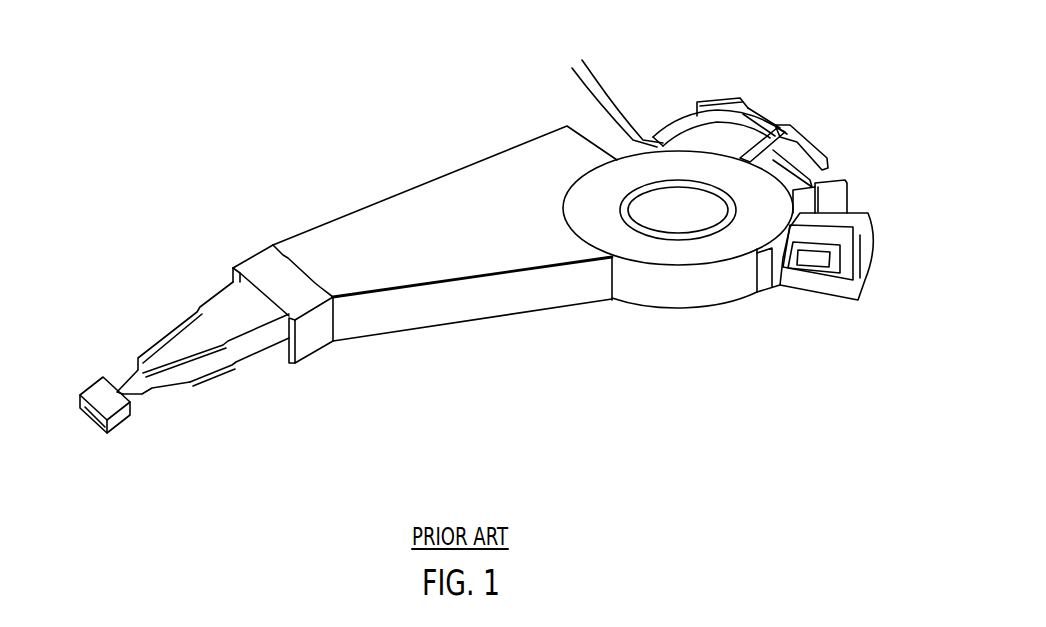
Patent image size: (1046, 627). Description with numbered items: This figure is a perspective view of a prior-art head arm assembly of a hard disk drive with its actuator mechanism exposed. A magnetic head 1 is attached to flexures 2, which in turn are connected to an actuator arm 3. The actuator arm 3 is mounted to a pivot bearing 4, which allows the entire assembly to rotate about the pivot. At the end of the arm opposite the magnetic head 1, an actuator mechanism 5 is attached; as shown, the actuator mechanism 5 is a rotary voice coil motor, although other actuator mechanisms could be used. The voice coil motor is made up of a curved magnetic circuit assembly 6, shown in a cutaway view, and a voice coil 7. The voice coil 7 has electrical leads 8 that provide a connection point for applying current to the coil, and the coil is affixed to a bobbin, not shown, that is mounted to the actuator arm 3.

The magnetic head 1 is at (88, 388).
The flexures 2 is at (173, 320).
The actuator arm 3 is at (417, 190).
The pivot bearing 4 is at (652, 206).
The actuator mechanism 5 is at (853, 122).
The curved magnetic circuit assembly 6 is at (877, 277).
The voice coil 7 is at (740, 102).
The electrical leads 8 is at (568, 75).